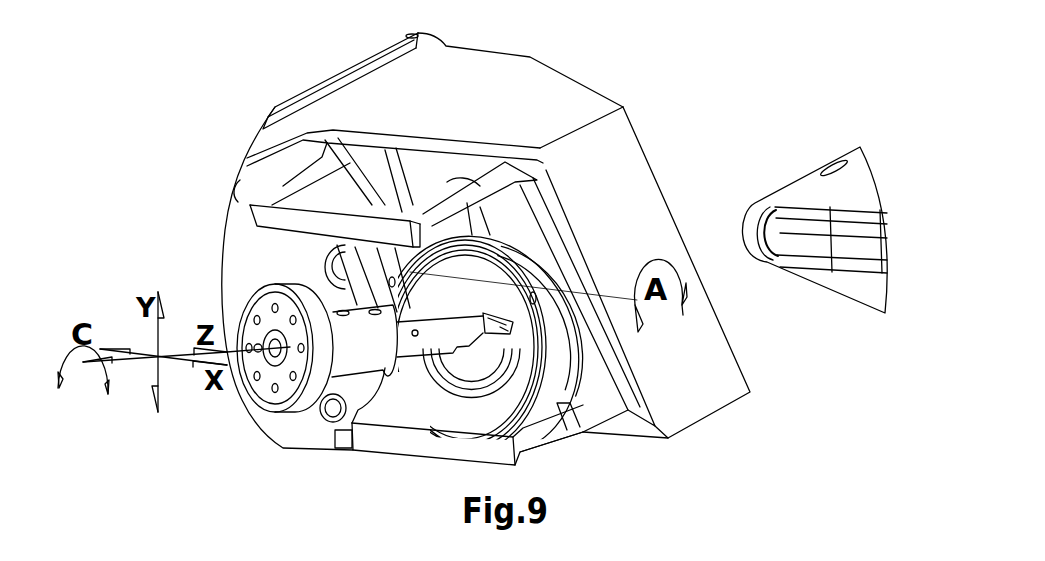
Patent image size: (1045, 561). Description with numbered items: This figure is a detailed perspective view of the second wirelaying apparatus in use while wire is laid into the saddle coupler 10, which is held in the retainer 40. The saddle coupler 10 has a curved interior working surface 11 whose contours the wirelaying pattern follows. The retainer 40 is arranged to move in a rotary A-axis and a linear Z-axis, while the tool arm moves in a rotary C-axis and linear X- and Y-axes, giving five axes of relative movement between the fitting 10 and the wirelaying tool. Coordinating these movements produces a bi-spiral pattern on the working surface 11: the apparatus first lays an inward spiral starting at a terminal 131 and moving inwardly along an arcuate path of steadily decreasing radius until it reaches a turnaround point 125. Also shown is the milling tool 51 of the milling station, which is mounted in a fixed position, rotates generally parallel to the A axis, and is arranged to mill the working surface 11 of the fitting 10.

The saddle coupler 10 is at (418, 443).
The working surface 11 is at (505, 405).
The retainer 40 is at (686, 393).
The milling tool 51 is at (815, 277).
The turnaround point 125 is at (515, 289).
The terminal 131 is at (542, 292).